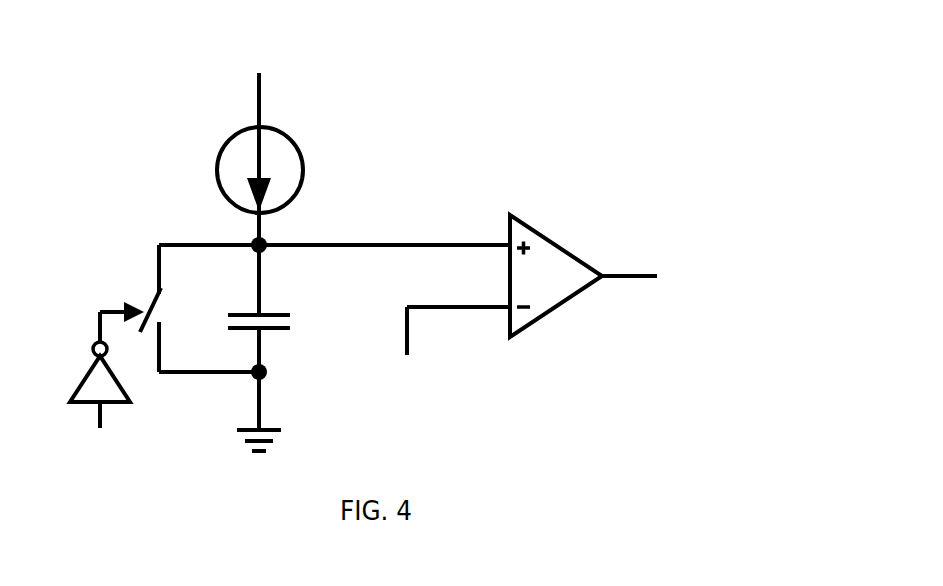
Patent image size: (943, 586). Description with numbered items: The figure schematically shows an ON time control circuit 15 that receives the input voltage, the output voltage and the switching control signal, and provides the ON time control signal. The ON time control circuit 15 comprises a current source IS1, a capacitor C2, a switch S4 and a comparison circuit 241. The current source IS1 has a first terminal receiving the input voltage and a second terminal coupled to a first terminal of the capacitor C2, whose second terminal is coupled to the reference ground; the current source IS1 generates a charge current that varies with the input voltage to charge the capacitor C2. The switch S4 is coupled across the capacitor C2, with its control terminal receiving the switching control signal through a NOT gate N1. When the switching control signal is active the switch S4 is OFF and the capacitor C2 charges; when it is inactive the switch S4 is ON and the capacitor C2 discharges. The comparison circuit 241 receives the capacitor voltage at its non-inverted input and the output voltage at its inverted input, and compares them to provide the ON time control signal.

The ON time control circuit 15 is at (562, 97).
The comparison circuit 241 is at (556, 244).
The current source IS1 is at (233, 159).
The capacitor C2 is at (237, 337).
The switch S4 is at (178, 308).
The NOT gate N1 is at (81, 385).